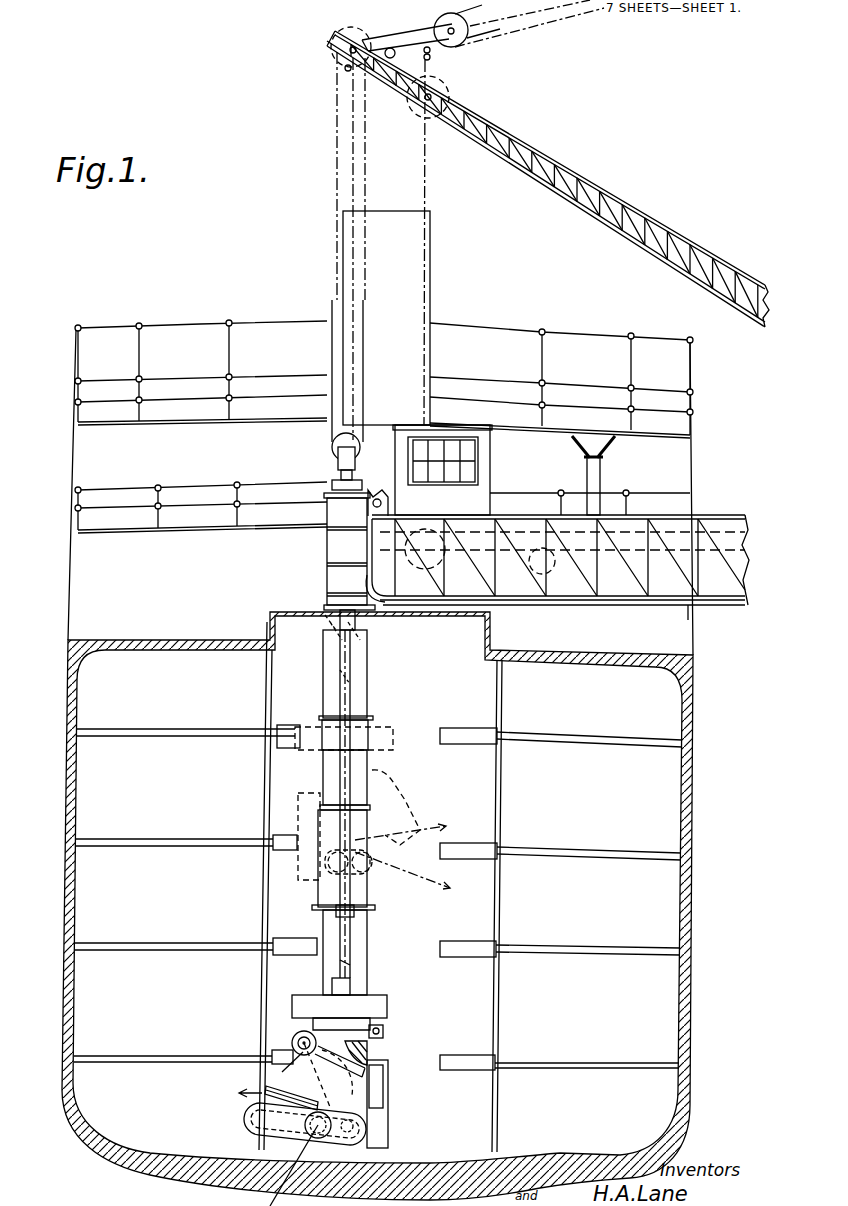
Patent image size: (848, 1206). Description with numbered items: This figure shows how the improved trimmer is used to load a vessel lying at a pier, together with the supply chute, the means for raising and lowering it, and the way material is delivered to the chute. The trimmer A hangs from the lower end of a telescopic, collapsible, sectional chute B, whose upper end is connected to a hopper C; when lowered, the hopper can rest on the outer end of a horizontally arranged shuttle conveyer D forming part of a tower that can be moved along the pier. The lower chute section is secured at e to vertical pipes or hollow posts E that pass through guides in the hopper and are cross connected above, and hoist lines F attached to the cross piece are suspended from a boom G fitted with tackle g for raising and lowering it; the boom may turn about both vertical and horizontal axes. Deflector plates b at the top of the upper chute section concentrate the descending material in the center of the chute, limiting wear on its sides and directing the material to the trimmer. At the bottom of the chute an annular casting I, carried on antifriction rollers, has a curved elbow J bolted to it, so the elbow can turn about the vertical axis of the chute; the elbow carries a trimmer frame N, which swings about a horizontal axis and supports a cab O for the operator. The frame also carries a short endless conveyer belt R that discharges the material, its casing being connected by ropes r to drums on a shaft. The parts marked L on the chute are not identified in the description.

The boom G is at (548, 215).
The tackle g is at (520, 48).
The hoist lines F is at (363, 183).
The hopper C is at (330, 556).
The conveyer D is at (623, 575).
The deflector plates b is at (372, 632).
The telescopic, collapsible, sectional chute B is at (368, 708).
The vertical pipes or hollow posts E is at (340, 677).
The bearing block L is at (385, 745).
The trimmer A is at (215, 1108).
The trimmer frame N is at (405, 830).
The cab O is at (300, 868).
The securing point e is at (335, 912).
The annular casting I is at (300, 1028).
The curved elbow J is at (383, 1055).
The ropes r is at (328, 1075).
The endless conveyer belt R is at (262, 1130).